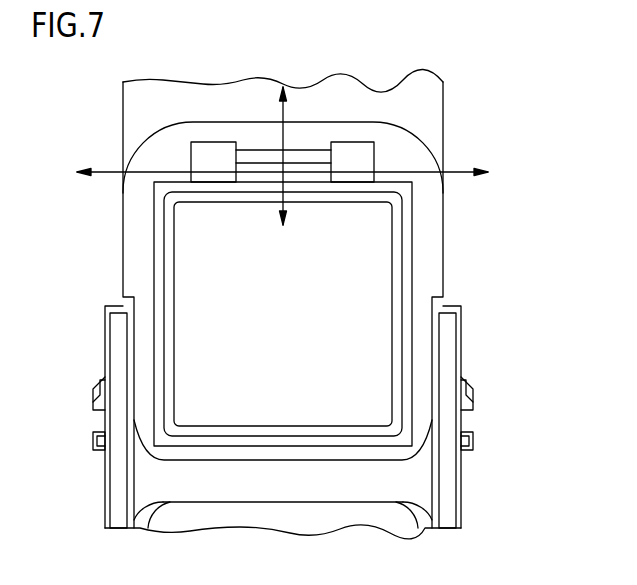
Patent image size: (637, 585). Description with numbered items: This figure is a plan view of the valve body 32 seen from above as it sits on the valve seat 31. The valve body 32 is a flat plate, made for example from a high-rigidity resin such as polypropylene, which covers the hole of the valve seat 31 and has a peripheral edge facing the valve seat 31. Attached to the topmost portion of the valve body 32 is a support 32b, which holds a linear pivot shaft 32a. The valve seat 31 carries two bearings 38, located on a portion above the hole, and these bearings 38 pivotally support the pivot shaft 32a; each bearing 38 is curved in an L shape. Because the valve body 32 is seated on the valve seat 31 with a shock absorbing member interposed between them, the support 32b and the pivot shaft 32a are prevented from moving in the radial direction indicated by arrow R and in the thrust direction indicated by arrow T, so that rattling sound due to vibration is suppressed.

The valve seat 31 is at (430, 245).
The valve body 32 is at (215, 253).
The pivot shaft 32a is at (259, 158).
The support 32b is at (320, 170).
The bearings 38 is at (209, 160).
The radial direction arrow R is at (287, 112).
The thrust direction arrow T is at (457, 172).